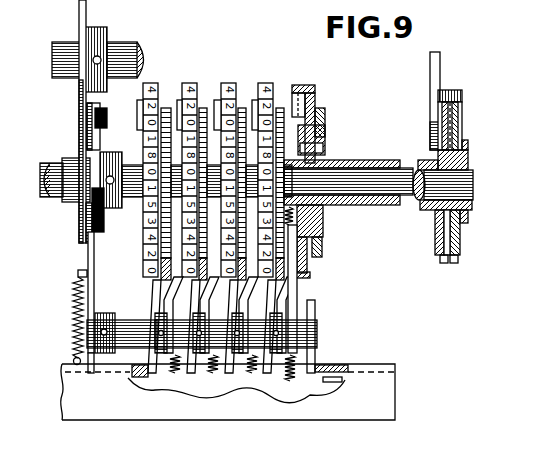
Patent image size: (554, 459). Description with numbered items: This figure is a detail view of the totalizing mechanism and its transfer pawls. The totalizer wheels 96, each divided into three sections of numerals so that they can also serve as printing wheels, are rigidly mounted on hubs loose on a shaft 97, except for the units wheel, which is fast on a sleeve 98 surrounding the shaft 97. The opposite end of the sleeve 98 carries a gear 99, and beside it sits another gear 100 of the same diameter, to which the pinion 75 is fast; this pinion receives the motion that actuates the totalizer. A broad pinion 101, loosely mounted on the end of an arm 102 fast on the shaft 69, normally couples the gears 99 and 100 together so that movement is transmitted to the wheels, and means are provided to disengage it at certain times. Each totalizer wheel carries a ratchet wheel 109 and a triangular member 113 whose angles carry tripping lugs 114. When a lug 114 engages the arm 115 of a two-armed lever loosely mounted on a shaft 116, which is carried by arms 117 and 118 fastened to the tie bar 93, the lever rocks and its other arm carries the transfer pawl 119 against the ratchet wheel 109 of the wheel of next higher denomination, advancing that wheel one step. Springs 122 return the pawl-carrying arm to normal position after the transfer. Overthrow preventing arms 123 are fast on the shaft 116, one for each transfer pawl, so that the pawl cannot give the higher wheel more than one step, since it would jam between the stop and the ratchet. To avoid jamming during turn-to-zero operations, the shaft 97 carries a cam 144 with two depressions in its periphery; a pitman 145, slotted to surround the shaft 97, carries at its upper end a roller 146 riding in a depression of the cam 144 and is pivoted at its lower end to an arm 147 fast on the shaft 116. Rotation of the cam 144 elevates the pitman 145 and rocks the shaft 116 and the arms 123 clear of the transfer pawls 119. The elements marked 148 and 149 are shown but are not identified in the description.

The shaft 69 is at (122, 47).
The pinion 75 is at (463, 228).
The tie bar 93 is at (198, 413).
The totalizer wheels 96 is at (268, 86).
The shaft 97 is at (57, 196).
The sleeve 98 is at (421, 164).
The gear 99 is at (439, 255).
The gear 100 is at (453, 261).
The broad pinion 101 is at (445, 90).
The arm 102 is at (433, 72).
The ratchet wheel 109 is at (203, 108).
The triangular member 113 is at (322, 132).
The tripping lugs 114 is at (253, 101).
The arm 115 is at (310, 277).
The shaft 116 is at (120, 322).
The arm 117 is at (308, 343).
The arm 118 is at (157, 317).
The transfer pawl 119 is at (290, 289).
The springs 122 is at (273, 352).
The overthrow preventing arms 123 is at (287, 302).
The cam 144 is at (99, 144).
The pitman 145 is at (91, 248).
The roller 146 is at (101, 112).
The arm 147 is at (96, 350).
The lever 148 is at (78, 132).
The block 149 is at (104, 226).